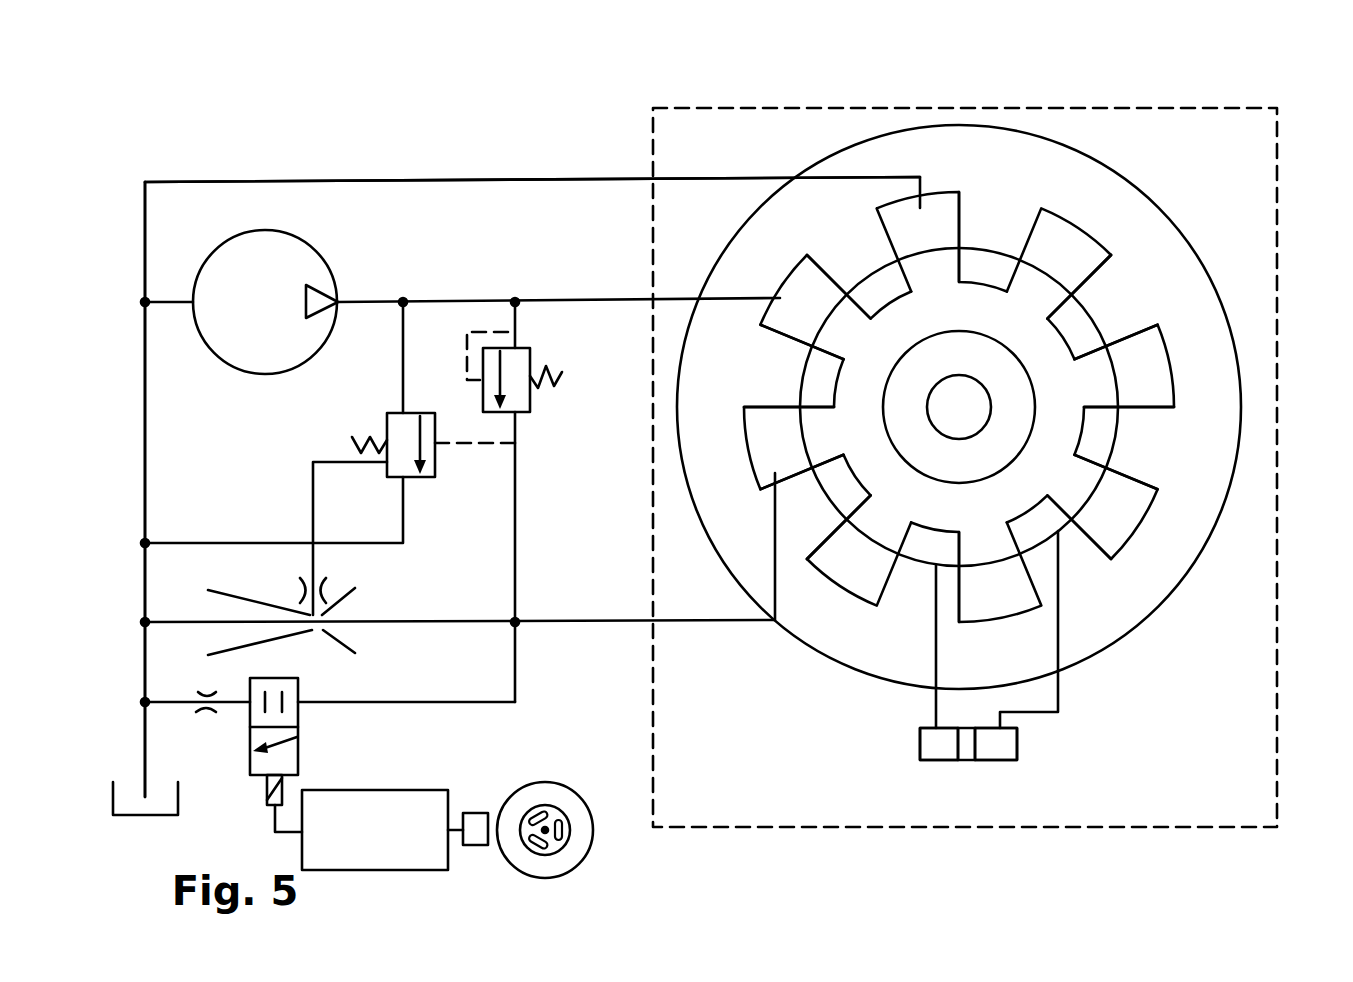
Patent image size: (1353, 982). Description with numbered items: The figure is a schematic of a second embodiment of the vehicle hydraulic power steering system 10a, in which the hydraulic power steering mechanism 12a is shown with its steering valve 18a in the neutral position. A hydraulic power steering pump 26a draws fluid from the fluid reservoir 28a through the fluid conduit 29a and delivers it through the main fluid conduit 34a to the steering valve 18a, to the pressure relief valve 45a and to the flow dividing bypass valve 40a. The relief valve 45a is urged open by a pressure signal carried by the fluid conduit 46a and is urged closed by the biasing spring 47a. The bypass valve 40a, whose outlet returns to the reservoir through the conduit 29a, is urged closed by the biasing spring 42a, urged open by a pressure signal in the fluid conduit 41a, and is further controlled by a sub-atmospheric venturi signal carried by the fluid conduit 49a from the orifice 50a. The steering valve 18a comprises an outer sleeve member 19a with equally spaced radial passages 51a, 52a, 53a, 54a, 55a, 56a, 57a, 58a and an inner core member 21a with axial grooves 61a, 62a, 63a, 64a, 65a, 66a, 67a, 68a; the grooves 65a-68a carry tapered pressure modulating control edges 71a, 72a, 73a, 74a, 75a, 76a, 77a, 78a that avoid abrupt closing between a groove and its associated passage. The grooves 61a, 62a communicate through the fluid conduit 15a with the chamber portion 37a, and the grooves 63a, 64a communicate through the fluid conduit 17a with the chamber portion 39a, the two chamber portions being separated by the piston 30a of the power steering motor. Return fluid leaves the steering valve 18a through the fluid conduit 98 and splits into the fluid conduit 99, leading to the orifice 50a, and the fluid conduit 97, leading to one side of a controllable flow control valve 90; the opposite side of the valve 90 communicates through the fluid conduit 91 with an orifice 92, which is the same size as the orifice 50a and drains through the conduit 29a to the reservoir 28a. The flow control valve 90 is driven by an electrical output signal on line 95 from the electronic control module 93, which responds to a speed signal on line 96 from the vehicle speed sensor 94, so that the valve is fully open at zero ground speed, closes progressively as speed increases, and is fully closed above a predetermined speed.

The vehicle hydraulic power steering system 10a is at (511, 160).
The hydraulic power steering mechanism 12a is at (848, 105).
The fluid conduit 15a is at (935, 632).
The fluid conduit 17a is at (1060, 687).
The power steering directional control valve 18a is at (1168, 658).
The outer sleeve member 19a is at (1172, 592).
The inner core member 21a is at (945, 273).
The hydraulic power steering pump 26a is at (287, 247).
The fluid reservoir 28a is at (155, 807).
The fluid conduit 29a is at (143, 426).
The piston 30a is at (967, 753).
The main fluid conduit 34a is at (442, 299).
The chamber portion 37a is at (920, 747).
The chamber portion 39a is at (1017, 743).
The flow dividing bypass valve 40a is at (433, 462).
The fluid conduit 41a is at (473, 440).
The biasing spring 42a is at (364, 436).
The pressure relief valve 45a is at (524, 353).
The fluid conduit 46a is at (467, 352).
The biasing spring 47a is at (566, 377).
The fluid conduit 49a is at (315, 498).
The orifice 50a is at (303, 633).
The passage 51a is at (800, 280).
The passage 52a is at (1063, 232).
The passage 53a is at (1130, 512).
The passage 54a is at (850, 575).
The passage 55a is at (942, 202).
The passage 56a is at (1028, 590).
The fluid passage 57a is at (765, 462).
The fluid passage 58a is at (1160, 355).
The groove 61a is at (990, 277).
The groove 62a is at (927, 530).
The groove 63a is at (886, 292).
The groove 64a is at (1027, 510).
The groove 65a is at (832, 373).
The groove 66a is at (1068, 331).
The groove 67a is at (1083, 415).
The groove 68a is at (850, 475).
The tapered pressure modulating control edge 71a is at (1078, 277).
The tapered pressure modulating control edge 72a is at (1105, 340).
The tapered pressure modulating control edge 73a is at (1118, 410).
The tapered pressure modulating control edge 74a is at (1108, 463).
The tapered pressure modulating control edge 75a is at (845, 520).
The tapered pressure modulating control edge 76a is at (812, 470).
The tapered pressure modulating control edge 77a is at (798, 405).
The tapered pressure modulating control edge 78a is at (812, 345).
The controllable flow control valve 90 is at (290, 738).
The fluid conduit 91 is at (233, 705).
The orifice 92 is at (203, 713).
The electronic control module 93 is at (433, 860).
The vehicle speed sensor 94 is at (473, 847).
The line 95 is at (282, 833).
The line 96 is at (450, 827).
The fluid conduit 97 is at (432, 700).
The fluid conduit 98 is at (609, 622).
The fluid conduit 99 is at (407, 620).